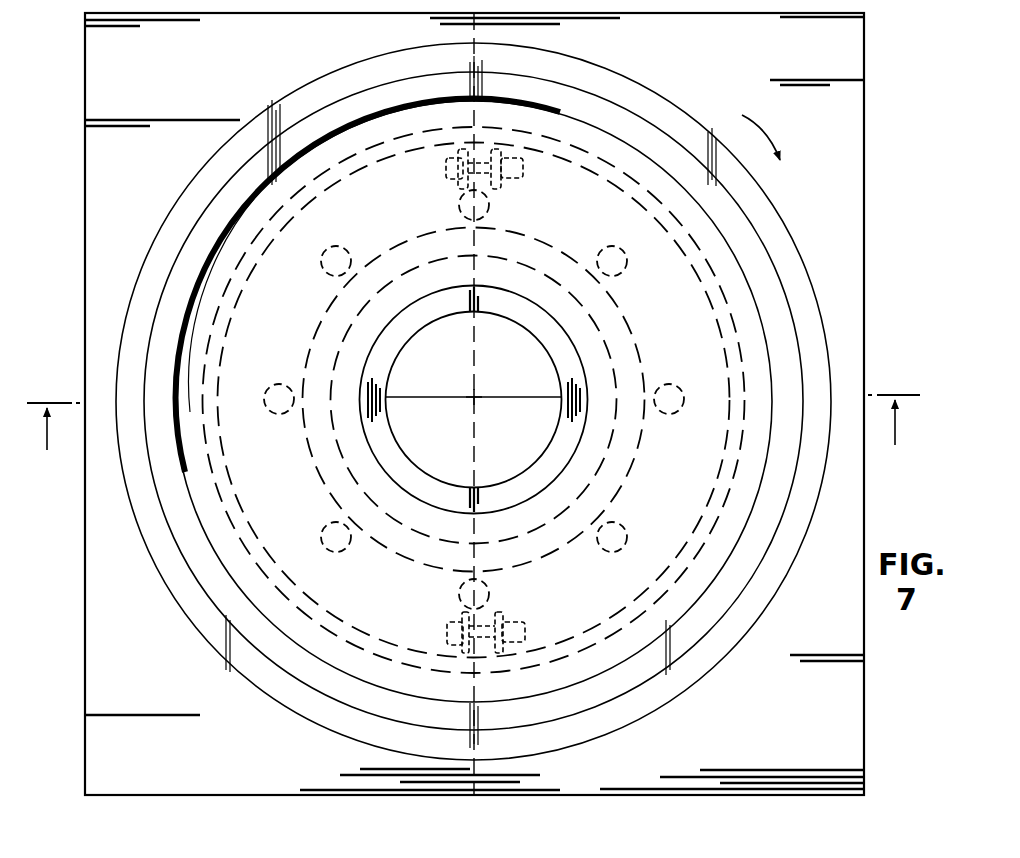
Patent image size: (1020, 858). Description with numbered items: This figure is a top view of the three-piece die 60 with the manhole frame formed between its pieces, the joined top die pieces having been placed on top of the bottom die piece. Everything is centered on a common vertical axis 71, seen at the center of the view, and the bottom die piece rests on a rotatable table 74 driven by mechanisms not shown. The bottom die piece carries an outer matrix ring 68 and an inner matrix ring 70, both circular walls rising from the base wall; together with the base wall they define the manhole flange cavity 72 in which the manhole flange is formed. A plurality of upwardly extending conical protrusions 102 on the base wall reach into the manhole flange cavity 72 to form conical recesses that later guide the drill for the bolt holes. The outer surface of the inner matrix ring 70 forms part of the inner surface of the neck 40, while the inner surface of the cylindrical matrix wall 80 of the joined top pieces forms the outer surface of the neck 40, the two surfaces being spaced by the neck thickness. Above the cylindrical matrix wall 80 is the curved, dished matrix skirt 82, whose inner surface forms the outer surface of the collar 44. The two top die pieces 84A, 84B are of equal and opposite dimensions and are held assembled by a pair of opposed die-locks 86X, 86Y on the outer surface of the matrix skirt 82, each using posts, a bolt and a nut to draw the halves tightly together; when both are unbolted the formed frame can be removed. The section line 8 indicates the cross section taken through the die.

The section line 8- 8 is at (473, 408).
The neck 40 is at (407, 510).
The collar 44 is at (206, 228).
The three-piece die 60 is at (469, 395).
The outer matrix ring 68 is at (268, 572).
The inner matrix ring 70 is at (400, 340).
The vertical axis 71 is at (482, 394).
The manhole flange cavity 72 is at (366, 455).
The rotatable table 74 is at (848, 50).
The cylindrical matrix wall 80 is at (352, 485).
The matrix skirt 82 is at (166, 250).
The belt 84A is at (348, 72).
The belt 84B is at (663, 108).
The die-lock 86X is at (512, 138).
The die-lock 86Y is at (523, 622).
The conical protrusions 102 is at (490, 205).